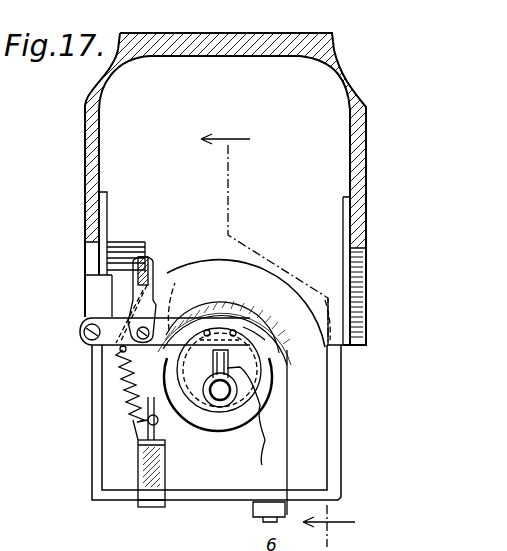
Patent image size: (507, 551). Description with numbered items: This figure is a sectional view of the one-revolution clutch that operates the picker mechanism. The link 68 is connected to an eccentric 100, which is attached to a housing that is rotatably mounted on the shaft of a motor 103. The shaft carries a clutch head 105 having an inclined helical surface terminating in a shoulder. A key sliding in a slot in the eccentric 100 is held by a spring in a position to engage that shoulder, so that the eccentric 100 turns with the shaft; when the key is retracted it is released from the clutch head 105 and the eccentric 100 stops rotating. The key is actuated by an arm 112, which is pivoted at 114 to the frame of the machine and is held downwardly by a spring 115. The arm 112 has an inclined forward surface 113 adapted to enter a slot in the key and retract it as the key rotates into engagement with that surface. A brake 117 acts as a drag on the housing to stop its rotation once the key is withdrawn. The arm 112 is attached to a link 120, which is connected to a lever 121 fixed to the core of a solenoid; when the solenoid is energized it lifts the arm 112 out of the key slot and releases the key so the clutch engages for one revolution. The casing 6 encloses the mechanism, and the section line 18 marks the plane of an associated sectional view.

The casing shell 6 is at (367, 154).
The section line 18- 18 is at (278, 328).
The link 68 is at (244, 412).
The eccentric 100 is at (258, 460).
The motor 103 is at (307, 432).
The clutch head 105 is at (267, 383).
The arm 112 is at (162, 323).
The inclined forward surface 113 is at (243, 327).
The pivot 114 is at (88, 334).
The spring 115 is at (127, 400).
The brake 117 is at (247, 287).
The link 120 is at (142, 288).
The lever 121 is at (143, 258).